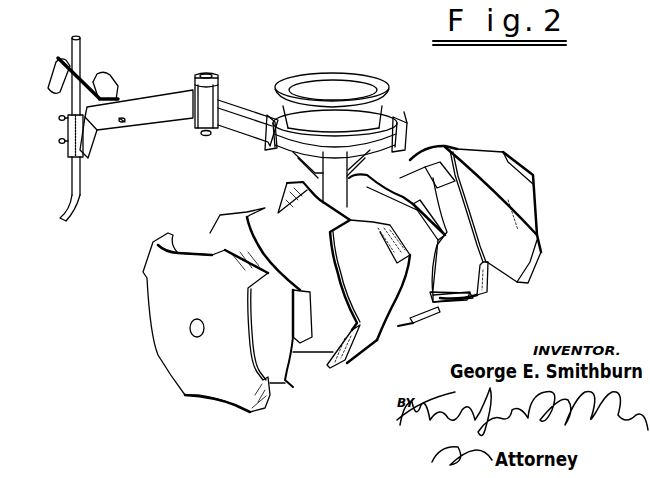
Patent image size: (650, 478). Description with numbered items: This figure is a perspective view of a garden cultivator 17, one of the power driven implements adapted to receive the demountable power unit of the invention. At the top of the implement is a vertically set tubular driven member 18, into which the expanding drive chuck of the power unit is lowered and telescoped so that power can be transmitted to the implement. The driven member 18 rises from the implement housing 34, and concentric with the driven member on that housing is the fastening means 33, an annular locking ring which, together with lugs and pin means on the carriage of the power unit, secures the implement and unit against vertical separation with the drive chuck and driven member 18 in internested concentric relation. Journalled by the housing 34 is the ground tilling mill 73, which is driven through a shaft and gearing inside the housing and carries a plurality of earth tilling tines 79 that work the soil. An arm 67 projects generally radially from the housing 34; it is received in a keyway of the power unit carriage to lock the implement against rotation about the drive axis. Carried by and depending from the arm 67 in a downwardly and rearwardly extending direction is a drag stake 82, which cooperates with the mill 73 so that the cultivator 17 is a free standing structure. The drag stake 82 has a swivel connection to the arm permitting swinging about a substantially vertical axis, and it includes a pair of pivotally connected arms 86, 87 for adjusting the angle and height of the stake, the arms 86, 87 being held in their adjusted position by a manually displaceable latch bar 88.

The garden cultivator 17 is at (443, 130).
The tubular driven member 18 is at (360, 78).
The fastening means 33 is at (413, 137).
The implement housing 34 is at (310, 167).
The arm 67 is at (247, 123).
The ground tilling mill 73 is at (550, 185).
The earth tilling tines 79 is at (173, 303).
The drag stake 82 is at (72, 170).
The arm 86 is at (148, 110).
The arm 87 is at (103, 90).
The latch bar 88 is at (80, 107).